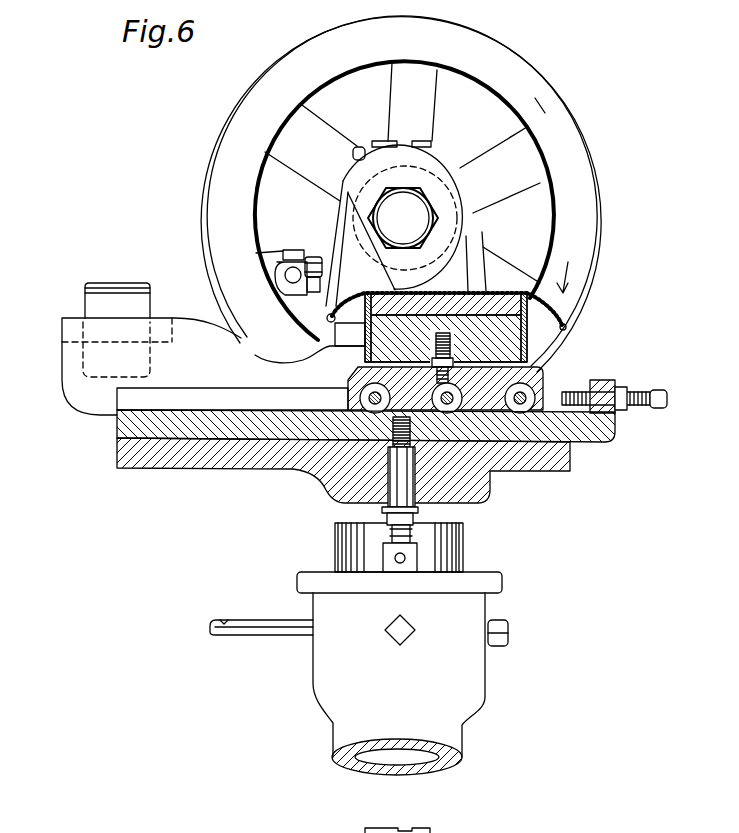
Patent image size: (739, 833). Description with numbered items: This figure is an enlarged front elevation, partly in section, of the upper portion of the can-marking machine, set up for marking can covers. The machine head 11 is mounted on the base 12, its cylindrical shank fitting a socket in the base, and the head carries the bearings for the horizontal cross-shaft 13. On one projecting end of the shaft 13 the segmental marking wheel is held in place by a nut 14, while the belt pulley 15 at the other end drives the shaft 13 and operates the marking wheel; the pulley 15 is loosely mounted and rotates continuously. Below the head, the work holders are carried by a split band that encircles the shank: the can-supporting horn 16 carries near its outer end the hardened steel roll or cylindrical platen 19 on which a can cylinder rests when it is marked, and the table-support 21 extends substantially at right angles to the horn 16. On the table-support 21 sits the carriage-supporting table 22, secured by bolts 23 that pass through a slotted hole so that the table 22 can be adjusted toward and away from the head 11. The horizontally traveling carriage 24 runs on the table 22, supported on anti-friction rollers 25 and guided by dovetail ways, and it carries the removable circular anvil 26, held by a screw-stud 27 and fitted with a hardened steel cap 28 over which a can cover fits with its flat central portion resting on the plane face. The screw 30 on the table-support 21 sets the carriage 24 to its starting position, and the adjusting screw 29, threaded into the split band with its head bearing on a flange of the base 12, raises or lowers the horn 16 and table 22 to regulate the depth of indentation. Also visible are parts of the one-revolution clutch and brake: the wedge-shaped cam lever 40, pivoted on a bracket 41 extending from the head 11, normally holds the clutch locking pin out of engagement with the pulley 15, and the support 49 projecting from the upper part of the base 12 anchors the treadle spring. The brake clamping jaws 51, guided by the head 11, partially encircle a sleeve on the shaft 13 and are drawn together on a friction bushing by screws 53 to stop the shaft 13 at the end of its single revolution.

The machine head 11 is at (482, 542).
The base 12 is at (402, 673).
The cross-shaft 13 is at (403, 218).
The nut 14 is at (410, 232).
The belt pulley 15 is at (401, 194).
The can-supporting horn 16 is at (213, 366).
The cylindrical platen 19 is at (117, 300).
The table-support 21 is at (218, 471).
The carriage-supporting table 22 is at (116, 432).
The bolts 23 is at (410, 490).
The carriage 24 is at (348, 373).
The anti-friction rollers 25 is at (360, 400).
The anvil 26 is at (527, 338).
The screw-stud 27 is at (525, 346).
The cap 28 is at (528, 300).
The adjusting screw 29 is at (387, 541).
The screw 30 is at (645, 392).
The cam lever 40 is at (429, 311).
The bracket 41 is at (315, 251).
The support 49 is at (243, 636).
The clamping jaws 51 is at (335, 238).
The screws 53 is at (359, 148).